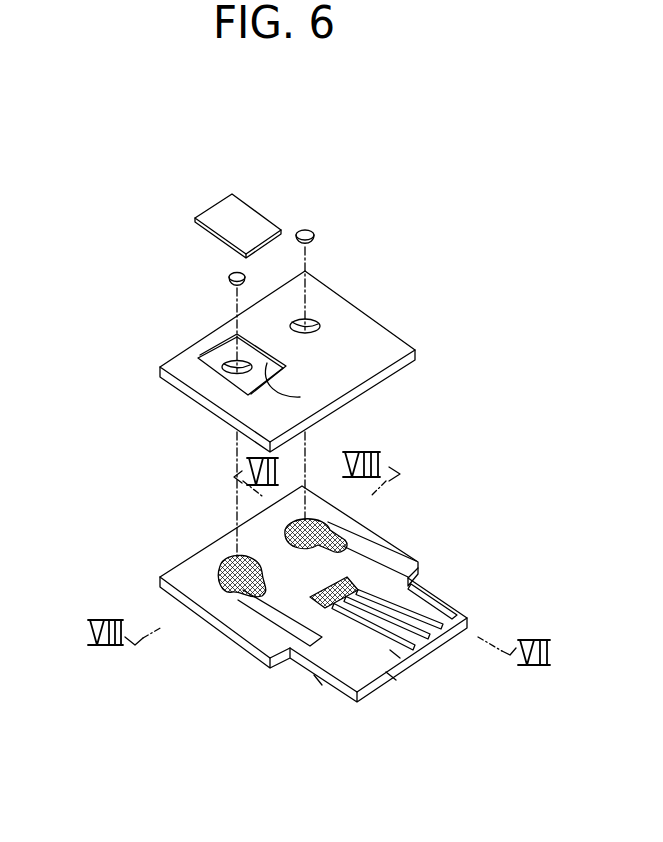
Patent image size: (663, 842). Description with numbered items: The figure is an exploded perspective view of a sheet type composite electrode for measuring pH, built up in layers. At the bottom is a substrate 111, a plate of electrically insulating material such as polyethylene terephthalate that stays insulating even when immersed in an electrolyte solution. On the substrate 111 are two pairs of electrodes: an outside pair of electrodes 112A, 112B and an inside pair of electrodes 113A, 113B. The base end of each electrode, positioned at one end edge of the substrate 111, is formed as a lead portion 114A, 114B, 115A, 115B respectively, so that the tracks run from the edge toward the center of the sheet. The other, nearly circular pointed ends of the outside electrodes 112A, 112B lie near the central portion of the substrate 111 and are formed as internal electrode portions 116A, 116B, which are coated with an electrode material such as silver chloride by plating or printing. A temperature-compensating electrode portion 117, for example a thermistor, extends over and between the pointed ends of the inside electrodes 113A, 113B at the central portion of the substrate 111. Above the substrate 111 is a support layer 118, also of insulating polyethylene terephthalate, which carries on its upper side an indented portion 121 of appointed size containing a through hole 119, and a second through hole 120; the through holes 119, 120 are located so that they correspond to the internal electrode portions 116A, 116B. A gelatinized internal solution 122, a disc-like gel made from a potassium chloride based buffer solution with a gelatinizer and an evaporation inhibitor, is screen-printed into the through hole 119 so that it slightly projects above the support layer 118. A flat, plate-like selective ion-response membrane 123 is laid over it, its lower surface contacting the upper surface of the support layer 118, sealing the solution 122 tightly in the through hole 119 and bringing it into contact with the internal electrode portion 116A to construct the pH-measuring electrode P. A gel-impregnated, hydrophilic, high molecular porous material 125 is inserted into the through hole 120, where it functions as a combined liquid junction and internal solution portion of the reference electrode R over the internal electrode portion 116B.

The substrate 111 is at (213, 623).
The outside electrode 112A is at (283, 627).
The outside electrode 112B is at (413, 556).
The inside electrode 113A is at (320, 680).
The inside electrode 113B is at (400, 602).
The lead portion 114A is at (392, 676).
The lead portion 114B is at (437, 608).
The lead portion 115A is at (395, 655).
The lead portion 115B is at (423, 635).
The internal electrode portion 116A is at (218, 560).
The internal electrode portion 116B is at (335, 524).
The temperature-compensating electrode portion 117 is at (325, 609).
The support layer 118 is at (392, 348).
The through hole 119 is at (207, 365).
The through hole 120 is at (316, 320).
The indented portion 121 is at (300, 397).
The gelatinized internal solution 122 is at (224, 282).
The selective ion-response membrane 123 is at (213, 208).
The gel-impregnated hydrophilic high molecular porous material 125 is at (316, 231).
The pH-measuring electrode P is at (176, 231).
The reference electrode R is at (365, 258).